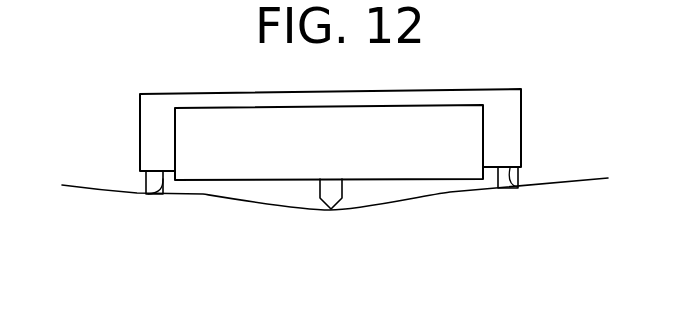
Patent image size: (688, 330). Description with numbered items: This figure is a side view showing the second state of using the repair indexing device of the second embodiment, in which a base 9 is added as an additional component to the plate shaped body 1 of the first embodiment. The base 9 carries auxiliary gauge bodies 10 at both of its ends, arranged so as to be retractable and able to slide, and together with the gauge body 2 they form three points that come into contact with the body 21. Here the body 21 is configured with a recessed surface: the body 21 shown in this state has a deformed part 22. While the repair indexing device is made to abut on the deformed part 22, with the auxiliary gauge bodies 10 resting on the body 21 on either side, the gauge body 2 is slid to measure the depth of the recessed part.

The base 9 is at (508, 123).
The plate shaped body 1 is at (452, 162).
The auxiliary gauge bodies 10 is at (155, 182).
The gauge body 2 is at (330, 193).
The deformed part 22 is at (364, 201).
The body 21 is at (573, 183).